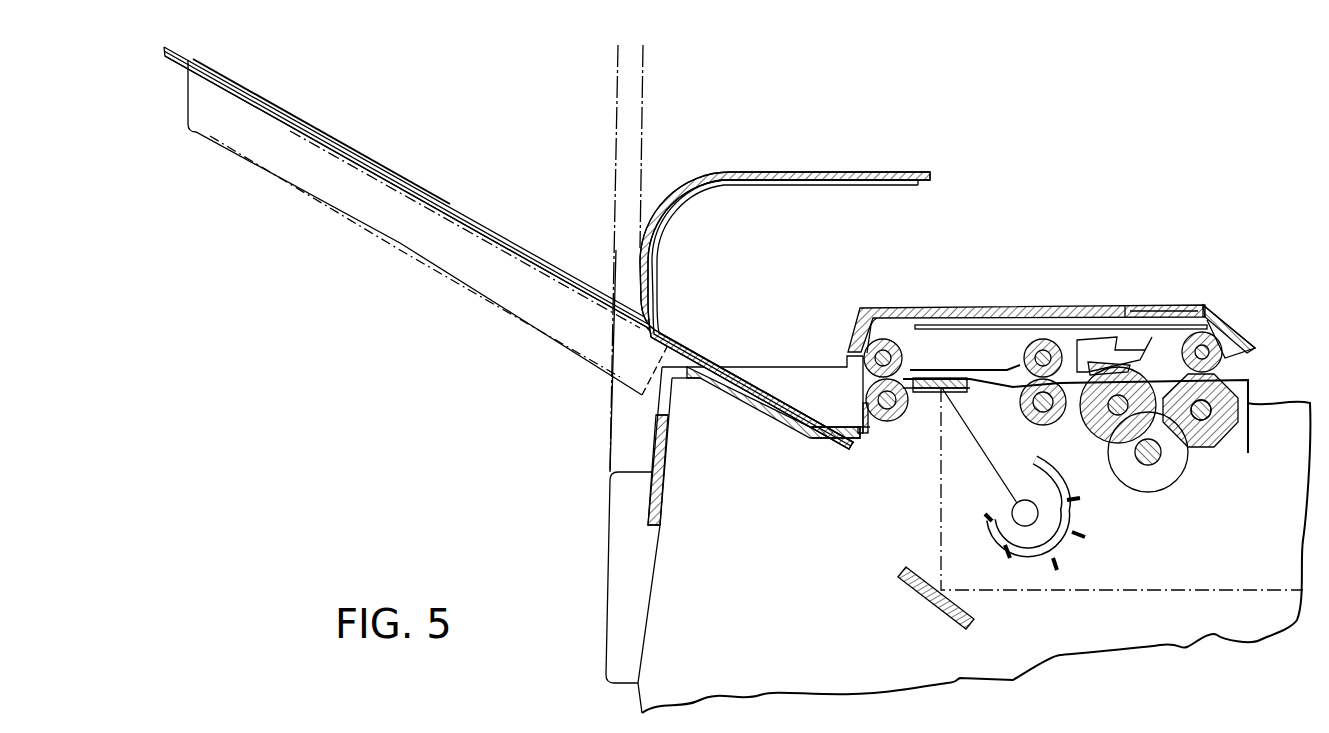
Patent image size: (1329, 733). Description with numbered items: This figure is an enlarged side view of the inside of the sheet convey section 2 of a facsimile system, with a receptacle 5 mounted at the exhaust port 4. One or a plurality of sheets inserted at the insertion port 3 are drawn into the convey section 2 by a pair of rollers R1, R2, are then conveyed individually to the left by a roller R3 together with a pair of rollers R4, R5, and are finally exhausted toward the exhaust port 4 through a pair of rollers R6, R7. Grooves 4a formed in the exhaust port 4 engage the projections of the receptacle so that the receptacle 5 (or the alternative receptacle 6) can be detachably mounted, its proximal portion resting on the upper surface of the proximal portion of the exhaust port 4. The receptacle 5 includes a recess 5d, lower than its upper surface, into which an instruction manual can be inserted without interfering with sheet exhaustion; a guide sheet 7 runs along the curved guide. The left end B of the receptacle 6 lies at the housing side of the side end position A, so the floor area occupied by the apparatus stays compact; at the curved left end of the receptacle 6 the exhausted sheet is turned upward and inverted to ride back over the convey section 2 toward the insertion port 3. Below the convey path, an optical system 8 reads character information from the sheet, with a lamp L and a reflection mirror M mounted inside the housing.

The sheet convey section 2 is at (1003, 306).
The insertion port 3 is at (1243, 365).
The exhaust port 4 is at (828, 357).
The grooves 4a is at (843, 449).
The receptacle 5 is at (185, 52).
The recess 5d is at (413, 258).
The receptacle 6 is at (842, 172).
The guide sheet 7 is at (452, 202).
The optical system 8 is at (897, 537).
The side end position A is at (616, 72).
The left end B is at (644, 74).
The lamp L is at (1010, 506).
The reflection mirror M is at (927, 600).
The roller R1 is at (1240, 318).
The roller R2 is at (1220, 444).
The roller R3 is at (1100, 433).
The roller R4 is at (1050, 340).
The roller R5 is at (1027, 418).
The roller R6 is at (890, 340).
The roller R7 is at (892, 422).